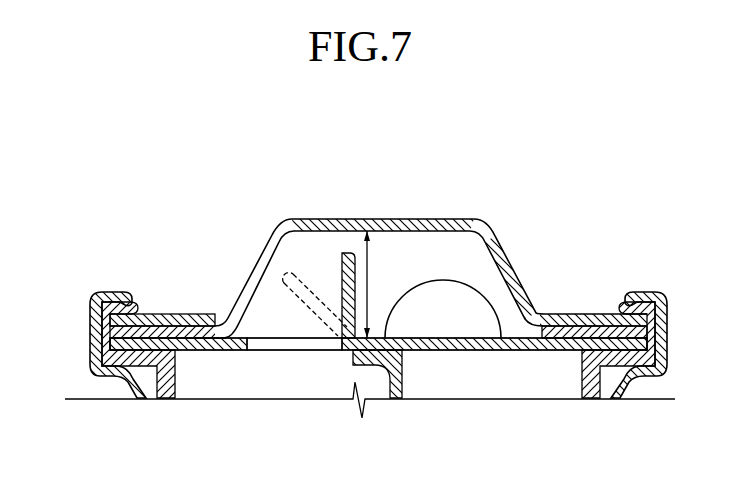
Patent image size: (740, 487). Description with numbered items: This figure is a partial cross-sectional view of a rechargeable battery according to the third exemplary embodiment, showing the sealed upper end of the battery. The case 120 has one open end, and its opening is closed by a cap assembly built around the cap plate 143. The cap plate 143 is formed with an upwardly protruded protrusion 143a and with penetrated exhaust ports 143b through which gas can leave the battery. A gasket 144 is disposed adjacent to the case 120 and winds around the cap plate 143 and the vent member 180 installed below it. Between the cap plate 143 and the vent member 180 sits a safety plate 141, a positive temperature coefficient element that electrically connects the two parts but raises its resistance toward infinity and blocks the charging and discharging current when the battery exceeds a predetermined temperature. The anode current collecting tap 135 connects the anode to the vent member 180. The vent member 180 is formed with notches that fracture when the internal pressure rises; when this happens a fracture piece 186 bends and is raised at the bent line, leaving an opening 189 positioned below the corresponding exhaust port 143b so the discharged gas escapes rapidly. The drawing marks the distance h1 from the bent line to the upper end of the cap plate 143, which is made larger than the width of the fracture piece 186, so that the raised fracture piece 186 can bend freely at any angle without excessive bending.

The case 120 is at (90, 336).
The anode current collecting tap 135 is at (392, 377).
The safety plate 141 is at (161, 314).
The cap plate 143 is at (378, 251).
The protrusion 143a is at (379, 219).
The exhaust port 143b is at (244, 280).
The gasket 144 is at (118, 294).
The vent member 180 is at (212, 352).
The first fracture piece 186 is at (342, 265).
The opening 189 is at (280, 344).
The distance from the bent line to the upper end of the cap plate h1 is at (378, 284).